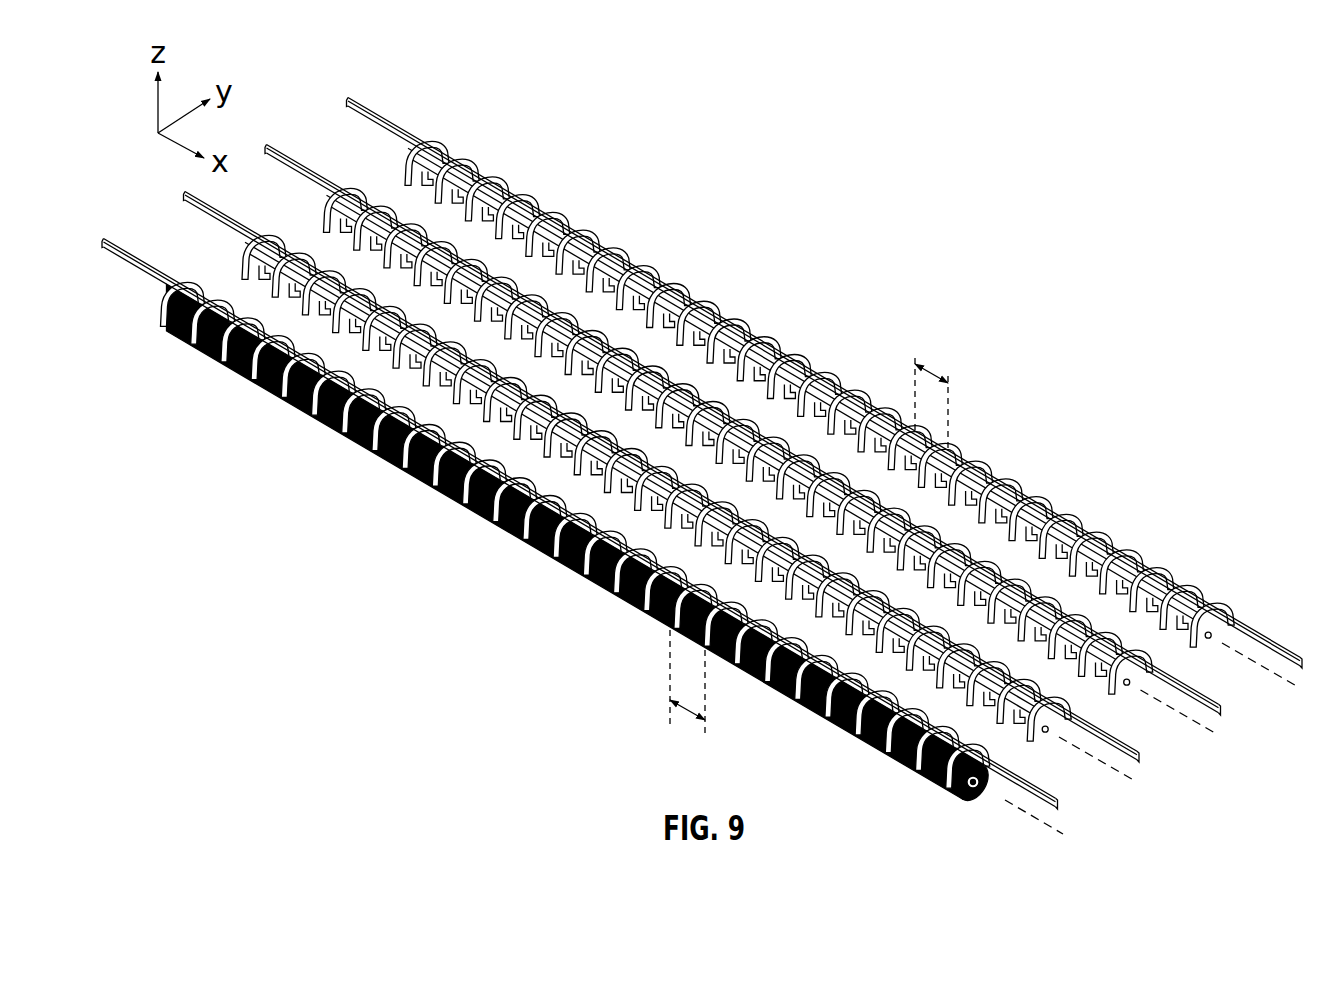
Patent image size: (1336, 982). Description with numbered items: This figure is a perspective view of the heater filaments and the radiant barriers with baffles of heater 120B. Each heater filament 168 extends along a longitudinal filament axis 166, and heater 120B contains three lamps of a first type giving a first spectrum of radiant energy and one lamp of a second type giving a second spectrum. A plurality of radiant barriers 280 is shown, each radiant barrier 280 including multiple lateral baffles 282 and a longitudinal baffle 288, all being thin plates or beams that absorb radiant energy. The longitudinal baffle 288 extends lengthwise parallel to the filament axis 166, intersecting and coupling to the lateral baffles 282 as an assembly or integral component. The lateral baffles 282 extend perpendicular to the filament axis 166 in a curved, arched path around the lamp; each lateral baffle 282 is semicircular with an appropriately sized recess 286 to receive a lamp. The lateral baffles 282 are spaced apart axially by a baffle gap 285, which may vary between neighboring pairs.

The heater 120B is at (702, 462).
The radiant barrier 280 is at (342, 192).
The lateral baffle 282 is at (700, 290).
The longitudinal baffle 288 is at (386, 236).
The baffle gap 285 is at (947, 374).
The heater filament 168 is at (788, 394).
The recess 286 is at (1209, 641).
The filament axis 166 is at (1097, 765).